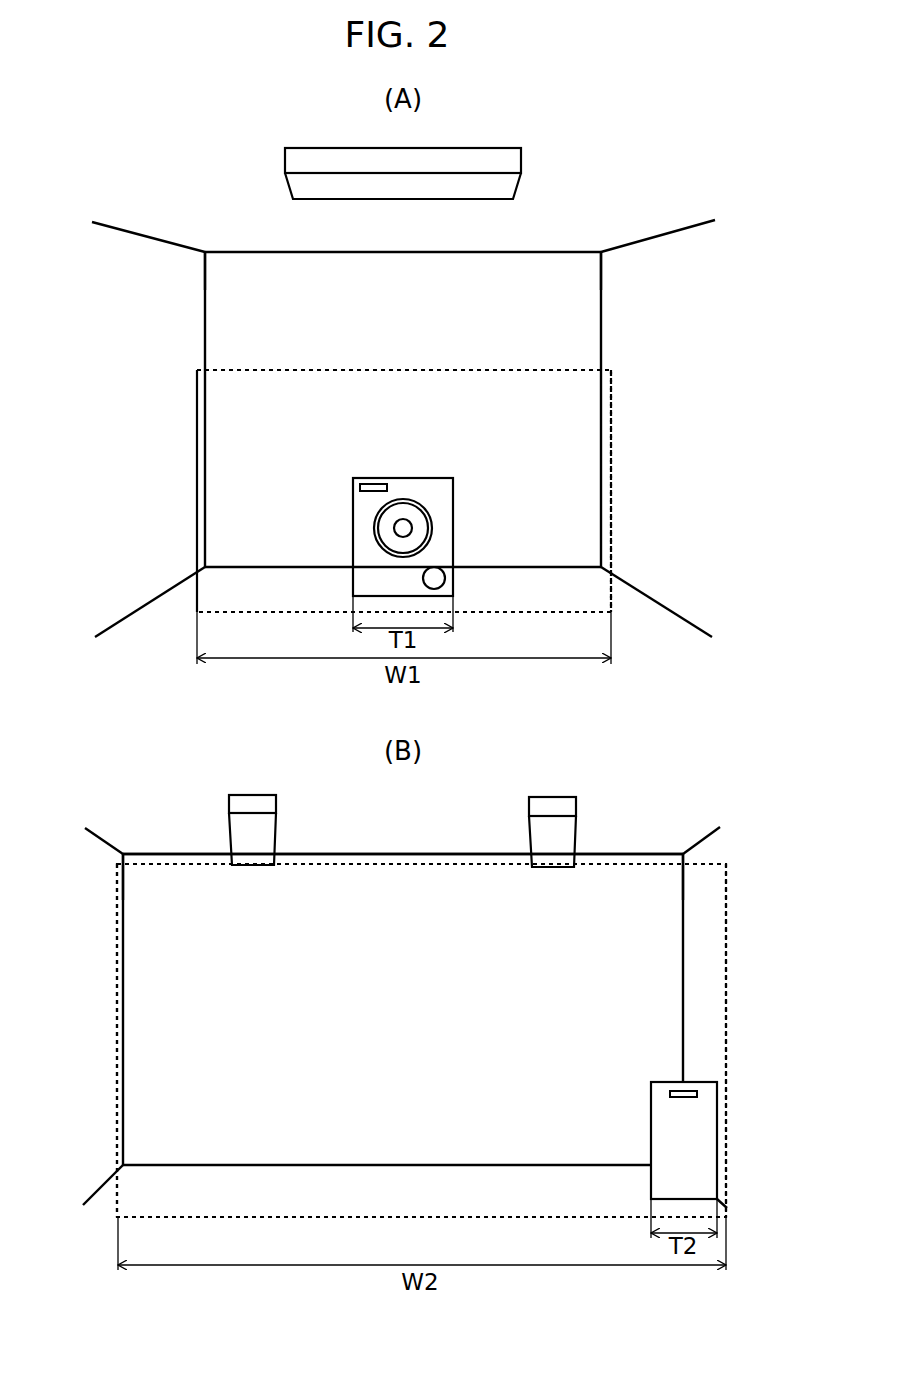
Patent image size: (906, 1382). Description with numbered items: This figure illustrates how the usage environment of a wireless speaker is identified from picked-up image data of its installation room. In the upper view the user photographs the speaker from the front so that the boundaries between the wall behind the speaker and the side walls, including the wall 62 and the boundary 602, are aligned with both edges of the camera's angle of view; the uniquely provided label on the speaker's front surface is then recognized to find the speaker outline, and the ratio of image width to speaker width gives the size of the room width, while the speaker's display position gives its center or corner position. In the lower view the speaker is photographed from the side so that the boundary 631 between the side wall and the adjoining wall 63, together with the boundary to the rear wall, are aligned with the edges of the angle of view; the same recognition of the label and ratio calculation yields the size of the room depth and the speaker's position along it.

The wall 62 is at (672, 270).
The wall 63 is at (90, 878).
The boundary 602 is at (600, 280).
The boundary 631 is at (125, 888).